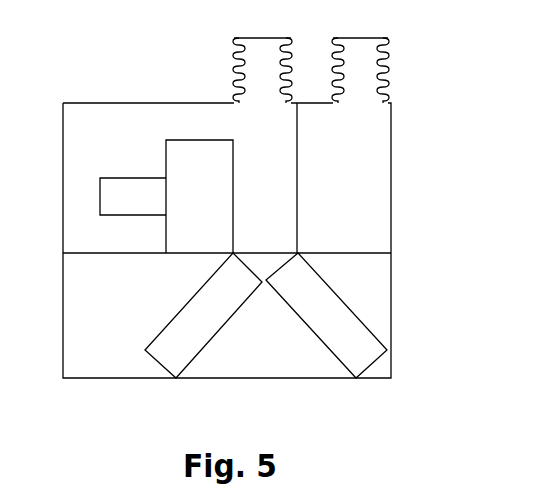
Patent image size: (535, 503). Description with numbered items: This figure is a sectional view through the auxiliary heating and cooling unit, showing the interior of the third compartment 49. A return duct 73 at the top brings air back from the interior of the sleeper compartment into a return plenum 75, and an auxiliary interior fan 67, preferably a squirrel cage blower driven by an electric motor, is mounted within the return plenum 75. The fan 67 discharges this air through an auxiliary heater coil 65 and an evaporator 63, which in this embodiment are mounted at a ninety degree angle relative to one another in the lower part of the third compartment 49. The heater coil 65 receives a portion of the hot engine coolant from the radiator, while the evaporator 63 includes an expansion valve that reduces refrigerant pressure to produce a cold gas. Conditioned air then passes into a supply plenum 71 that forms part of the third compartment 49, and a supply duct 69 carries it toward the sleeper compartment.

The third compartment 49 is at (391, 160).
The evaporator 63 is at (340, 297).
The auxiliary heater coil 65 is at (178, 308).
The auxiliary interior fan 67 is at (172, 158).
The supply duct 69 is at (387, 55).
The supply plenum 71 is at (363, 200).
The return duct 73 is at (240, 70).
The return plenum 75 is at (285, 151).